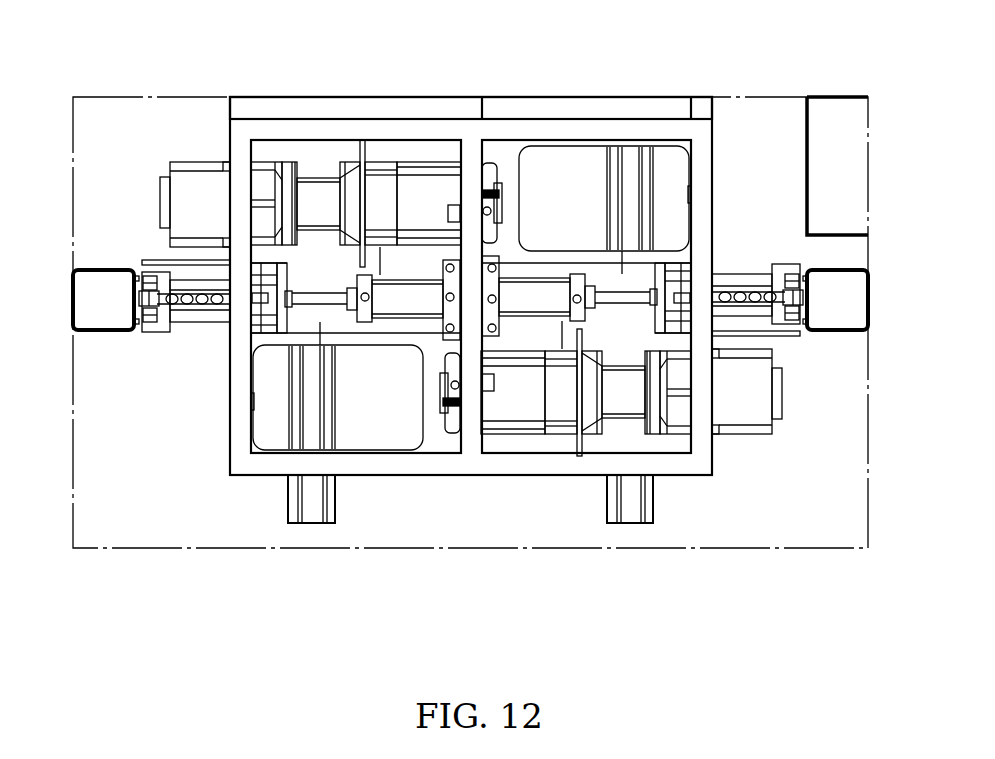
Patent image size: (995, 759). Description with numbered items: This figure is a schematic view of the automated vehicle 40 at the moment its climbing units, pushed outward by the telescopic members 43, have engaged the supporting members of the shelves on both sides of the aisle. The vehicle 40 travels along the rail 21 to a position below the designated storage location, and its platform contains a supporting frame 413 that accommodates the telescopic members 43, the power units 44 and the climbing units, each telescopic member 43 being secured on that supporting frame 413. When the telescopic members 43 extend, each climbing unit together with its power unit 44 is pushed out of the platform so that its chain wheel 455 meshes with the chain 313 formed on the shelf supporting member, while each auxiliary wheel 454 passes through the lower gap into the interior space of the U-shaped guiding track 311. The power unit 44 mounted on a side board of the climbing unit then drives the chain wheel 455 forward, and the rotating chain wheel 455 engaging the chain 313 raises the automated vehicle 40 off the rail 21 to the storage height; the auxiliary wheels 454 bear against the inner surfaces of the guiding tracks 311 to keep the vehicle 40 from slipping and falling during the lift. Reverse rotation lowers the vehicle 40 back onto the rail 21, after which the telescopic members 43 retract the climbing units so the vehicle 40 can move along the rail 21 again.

The rail 21 is at (290, 515).
The automated vehicle 40 is at (212, 435).
The telescopic member 43 is at (397, 312).
The power unit 44 is at (195, 185).
The guiding track 311 is at (133, 268).
The chain 313 is at (133, 293).
The supporting frame 413 is at (322, 126).
The auxiliary wheel 454 is at (157, 274).
The chain wheel 455 is at (187, 300).